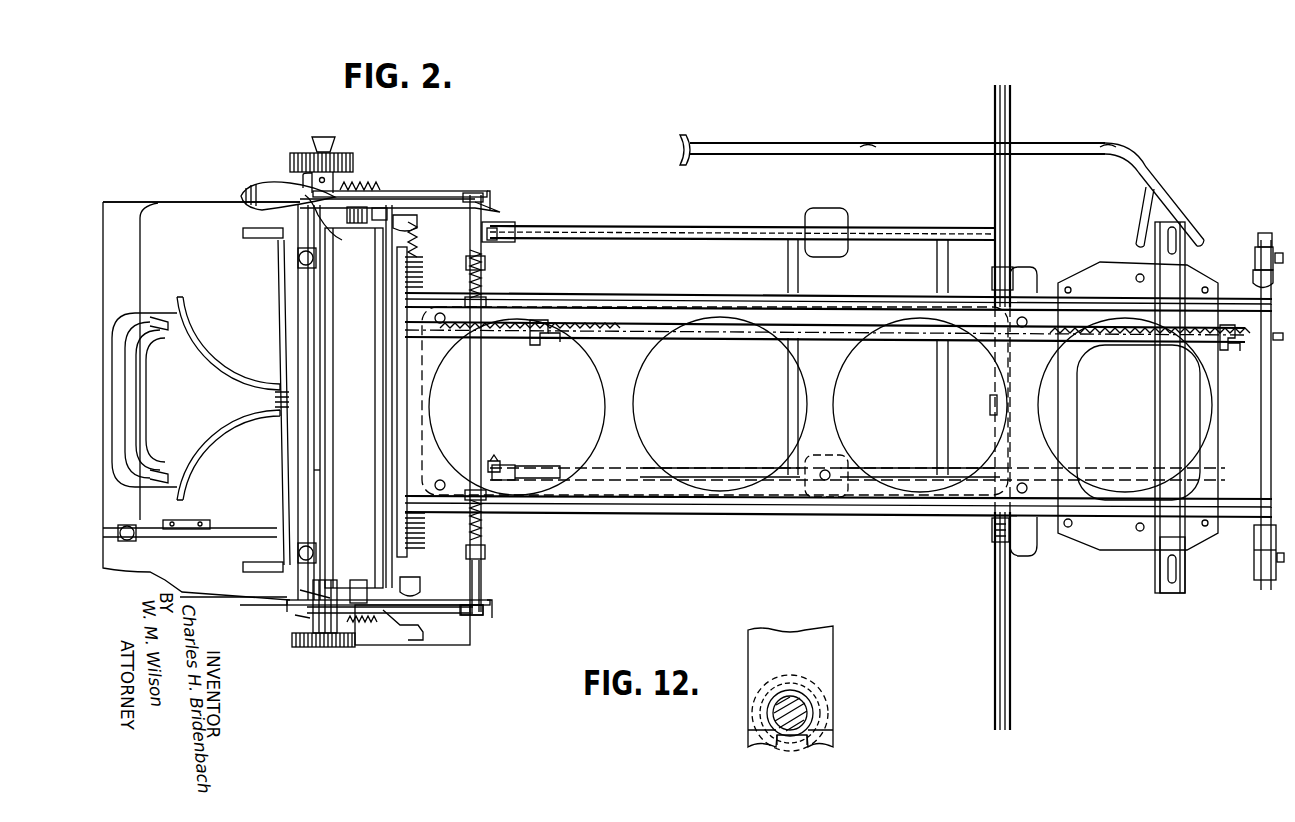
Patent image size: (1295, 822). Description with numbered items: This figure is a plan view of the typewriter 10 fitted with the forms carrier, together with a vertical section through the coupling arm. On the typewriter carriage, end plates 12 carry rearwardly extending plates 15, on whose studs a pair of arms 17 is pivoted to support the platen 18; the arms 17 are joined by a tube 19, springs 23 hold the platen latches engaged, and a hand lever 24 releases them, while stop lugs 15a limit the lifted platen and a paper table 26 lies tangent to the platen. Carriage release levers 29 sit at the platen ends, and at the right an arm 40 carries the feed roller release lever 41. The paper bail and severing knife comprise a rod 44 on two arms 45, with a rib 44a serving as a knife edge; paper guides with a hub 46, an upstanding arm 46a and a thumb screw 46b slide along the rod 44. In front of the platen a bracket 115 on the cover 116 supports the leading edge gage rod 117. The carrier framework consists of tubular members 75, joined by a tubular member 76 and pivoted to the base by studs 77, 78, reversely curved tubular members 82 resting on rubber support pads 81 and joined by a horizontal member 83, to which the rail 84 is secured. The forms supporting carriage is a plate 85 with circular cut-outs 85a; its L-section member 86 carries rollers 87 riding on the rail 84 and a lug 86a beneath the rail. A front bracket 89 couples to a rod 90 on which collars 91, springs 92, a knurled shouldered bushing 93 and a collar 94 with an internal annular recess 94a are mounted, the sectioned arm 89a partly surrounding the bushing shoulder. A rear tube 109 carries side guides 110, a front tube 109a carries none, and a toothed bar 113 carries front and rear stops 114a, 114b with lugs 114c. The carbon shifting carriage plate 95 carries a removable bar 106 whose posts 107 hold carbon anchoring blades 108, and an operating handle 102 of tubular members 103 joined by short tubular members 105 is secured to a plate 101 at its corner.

In FIG. 2, the typewriter 10 is at (127, 215).
In FIG. 2, the cover 116 is at (182, 216).
In FIG. 2, the hand lever 24 is at (258, 186).
In FIG. 2, the springs 23 is at (365, 188).
In FIG. 2, the end plates 12 is at (397, 202).
In FIG. 2, the arms 17 is at (448, 192).
In FIG. 2, the arms 45 is at (318, 590).
In FIG. 2, the hub 46 is at (316, 256).
In FIG. 2, the thumb screw 46b is at (316, 262).
In FIG. 2, the arm 46a is at (320, 545).
In FIG. 2, the plates 15 is at (442, 208).
In FIG. 2, the stop lugs 15a is at (495, 612).
In FIG. 2, the studs 77 is at (492, 240).
In FIG. 2, the collars 91 is at (466, 262).
In FIG. 2, the springs 92 is at (482, 272).
In FIG. 2, the rod 90 is at (482, 578).
In FIG. 12, the rod 90 is at (802, 718).
In FIG. 2, the studs 78 is at (500, 226).
In FIG. 2, the tubular members 75 is at (555, 482).
In FIG. 2, the tubular members 82 is at (686, 236).
In FIG. 2, the rubber support pads 81 is at (808, 212).
In FIG. 2, the tubular members 103 is at (770, 142).
In FIG. 2, the operating handle 102 is at (947, 183).
In FIG. 2, the tubular members 105 is at (880, 148).
In FIG. 2, the side guides 110 is at (1258, 255).
In FIG. 2, the plate 101 is at (1128, 252).
In FIG. 2, the lug 114c is at (536, 320).
In FIG. 2, the front stop 114a is at (540, 345).
In FIG. 2, the rear stop 114b is at (1232, 350).
In FIG. 2, the plate 85 is at (640, 305).
In FIG. 2, the circular cut-outs 85a is at (655, 355).
In FIG. 2, the tubular member 76 is at (788, 270).
In FIG. 2, the bar 113 is at (1272, 335).
In FIG. 2, the platen 18 is at (300, 333).
In FIG. 2, the rib 44a is at (315, 318).
In FIG. 2, the paper table 26 is at (358, 396).
In FIG. 2, the bracket 89 is at (460, 392).
In FIG. 2, the tube 109a is at (405, 418).
In FIG. 2, the rod 44 is at (308, 414).
In FIG. 2, the horizontal member 83 is at (936, 426).
In FIG. 2, the lug 86a is at (990, 410).
In FIG. 2, the member 86 is at (1028, 550).
In FIG. 2, the rollers 87 is at (992, 535).
In FIG. 2, the tube 109 is at (1262, 418).
In FIG. 2, the bracket 115 is at (198, 513).
In FIG. 2, the rod 117 is at (215, 540).
In FIG. 2, the tube 19 is at (362, 592).
In FIG. 2, the arm 40 is at (305, 607).
In FIG. 2, the carriage release levers 29 is at (312, 630).
In FIG. 2, the feed roller release lever 41 is at (418, 636).
In FIG. 2, the plate 95 is at (1083, 525).
In FIG. 2, the carbon anchoring blades 108 is at (1168, 535).
In FIG. 2, the bar 106 is at (1186, 560).
In FIG. 2, the posts 107 is at (1170, 568).
In FIG. 2, the rail 84 is at (995, 640).
In FIG. 12, the arms 89a is at (815, 655).
In FIG. 12, the shouldered bushing 93 is at (775, 720).
In FIG. 12, the internal annular recess 94a is at (781, 745).
In FIG. 12, the collar 94 is at (804, 745).